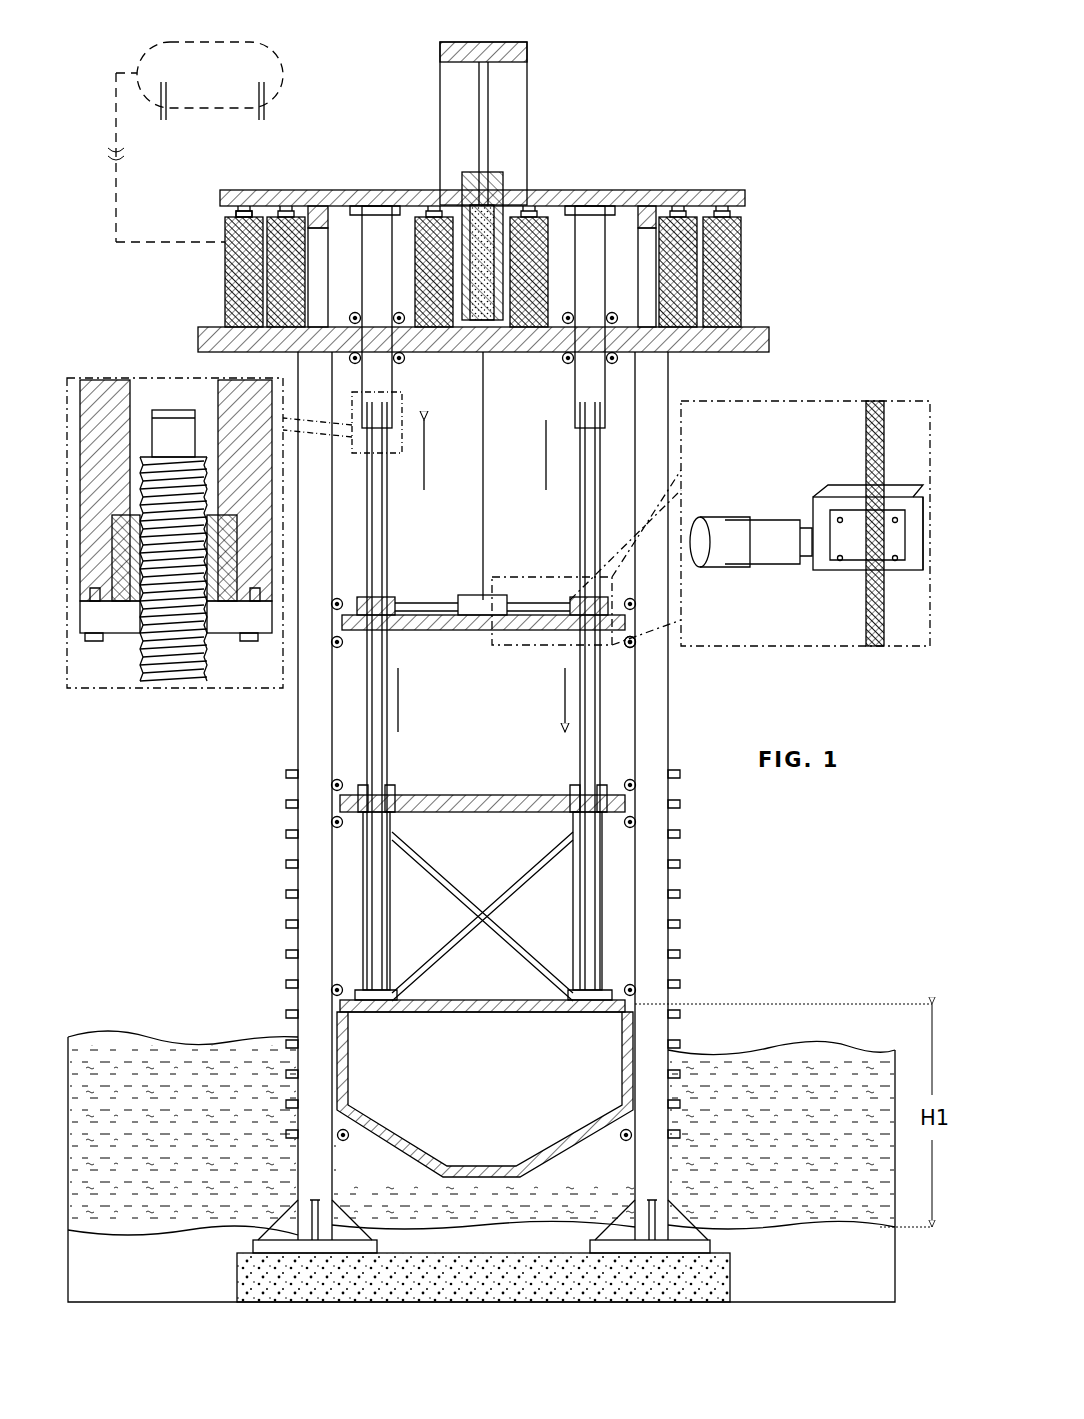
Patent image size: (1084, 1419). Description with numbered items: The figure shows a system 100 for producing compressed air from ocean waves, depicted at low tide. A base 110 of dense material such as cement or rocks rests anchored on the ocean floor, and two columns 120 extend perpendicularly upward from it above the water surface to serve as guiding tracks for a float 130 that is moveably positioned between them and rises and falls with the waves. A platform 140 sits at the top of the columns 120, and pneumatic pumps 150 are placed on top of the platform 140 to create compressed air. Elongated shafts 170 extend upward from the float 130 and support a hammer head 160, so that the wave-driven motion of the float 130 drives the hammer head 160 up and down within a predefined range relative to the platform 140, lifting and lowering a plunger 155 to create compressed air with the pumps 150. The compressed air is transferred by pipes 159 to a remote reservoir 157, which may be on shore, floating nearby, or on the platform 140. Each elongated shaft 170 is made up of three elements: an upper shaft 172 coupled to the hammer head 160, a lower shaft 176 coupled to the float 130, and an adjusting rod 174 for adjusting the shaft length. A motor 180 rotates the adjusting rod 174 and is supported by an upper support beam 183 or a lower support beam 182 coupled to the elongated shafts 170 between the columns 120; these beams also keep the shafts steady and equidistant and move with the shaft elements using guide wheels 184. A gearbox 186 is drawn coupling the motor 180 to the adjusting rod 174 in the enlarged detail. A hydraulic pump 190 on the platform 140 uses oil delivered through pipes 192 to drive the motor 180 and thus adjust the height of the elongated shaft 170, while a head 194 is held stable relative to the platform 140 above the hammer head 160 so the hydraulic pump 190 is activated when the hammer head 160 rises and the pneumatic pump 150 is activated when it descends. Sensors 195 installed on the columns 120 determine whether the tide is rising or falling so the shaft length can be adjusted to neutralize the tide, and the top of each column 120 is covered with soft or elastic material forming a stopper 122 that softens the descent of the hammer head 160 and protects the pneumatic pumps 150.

The system 100 is at (365, 34).
The base 110 is at (498, 1291).
The columns 120 is at (298, 1148).
The stopper 122 is at (320, 212).
The float 130 is at (498, 1097).
The platform 140 is at (775, 335).
The pneumatic pumps 150 is at (286, 306).
The plunger 155 is at (235, 215).
The remote reservoir 157 is at (265, 88).
The pipes 159 is at (115, 192).
The hammer head 160 is at (748, 190).
The elongated shaft 170 is at (615, 890).
The upper shaft 172 is at (100, 380).
The adjusting rod 174 is at (383, 511).
The lower shaft 176 is at (402, 885).
The motor 180 is at (496, 595).
The lower support beam 182 is at (472, 795).
The upper support beam 183 is at (435, 618).
The guide wheels 184 is at (637, 780).
The gearbox 186 is at (418, 597).
The hydraulic pump 190 is at (464, 202).
The pipes 192 is at (520, 414).
The head 194 is at (526, 51).
The sensors 195 is at (288, 875).